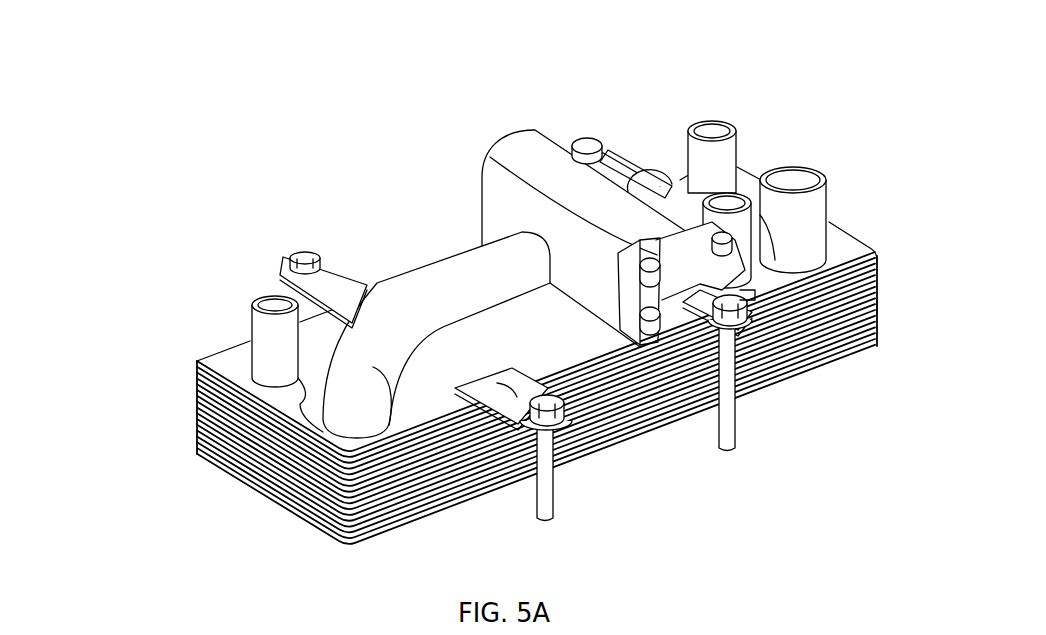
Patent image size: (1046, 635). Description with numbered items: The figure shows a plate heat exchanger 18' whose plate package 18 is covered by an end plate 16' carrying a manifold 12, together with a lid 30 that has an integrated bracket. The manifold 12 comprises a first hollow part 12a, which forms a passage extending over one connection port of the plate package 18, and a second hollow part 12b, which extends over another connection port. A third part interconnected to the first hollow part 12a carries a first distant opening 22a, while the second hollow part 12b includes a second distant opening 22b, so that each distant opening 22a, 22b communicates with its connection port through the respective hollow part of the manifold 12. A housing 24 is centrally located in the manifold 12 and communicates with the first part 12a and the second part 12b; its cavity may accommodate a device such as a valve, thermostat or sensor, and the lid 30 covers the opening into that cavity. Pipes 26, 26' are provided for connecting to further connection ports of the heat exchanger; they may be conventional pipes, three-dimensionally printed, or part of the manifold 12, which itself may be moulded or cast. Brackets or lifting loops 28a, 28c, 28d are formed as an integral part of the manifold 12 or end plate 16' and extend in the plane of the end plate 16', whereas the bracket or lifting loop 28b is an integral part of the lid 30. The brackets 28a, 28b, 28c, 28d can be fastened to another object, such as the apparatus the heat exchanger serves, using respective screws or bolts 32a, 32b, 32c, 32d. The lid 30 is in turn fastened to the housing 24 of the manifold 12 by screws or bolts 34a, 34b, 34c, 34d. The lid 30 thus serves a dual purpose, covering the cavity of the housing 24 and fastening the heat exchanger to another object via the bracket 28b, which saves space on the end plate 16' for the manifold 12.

The plate package 18 is at (471, 275).
The plate heat exchanger 18' is at (909, 160).
The pipe 26 is at (204, 196).
The pipe 26' is at (720, 99).
The screw/bolt 32c is at (305, 250).
The bracket/lifting loop 28c is at (332, 270).
The first hollow part 12a is at (372, 320).
The manifold 12 is at (443, 383).
The end plate 16' is at (393, 153).
The lid 30 is at (487, 155).
The housing 24 is at (513, 143).
The screw/bolt 32d is at (587, 142).
The bracket/lifting loop 28d is at (610, 167).
The second hollow part 12b is at (673, 190).
The first distant opening 22a is at (726, 200).
The second distant opening 22b is at (793, 180).
The bracket/lifting loop 28a is at (492, 388).
The screw/bolt 32a is at (537, 400).
The screw/bolt 34a is at (653, 280).
The screw/bolt 34b is at (655, 327).
The bracket/lifting loop 28b is at (700, 307).
The screw/bolt 32b is at (728, 306).
The screw/bolt 34c is at (742, 308).
The screw/bolt 34d is at (731, 243).